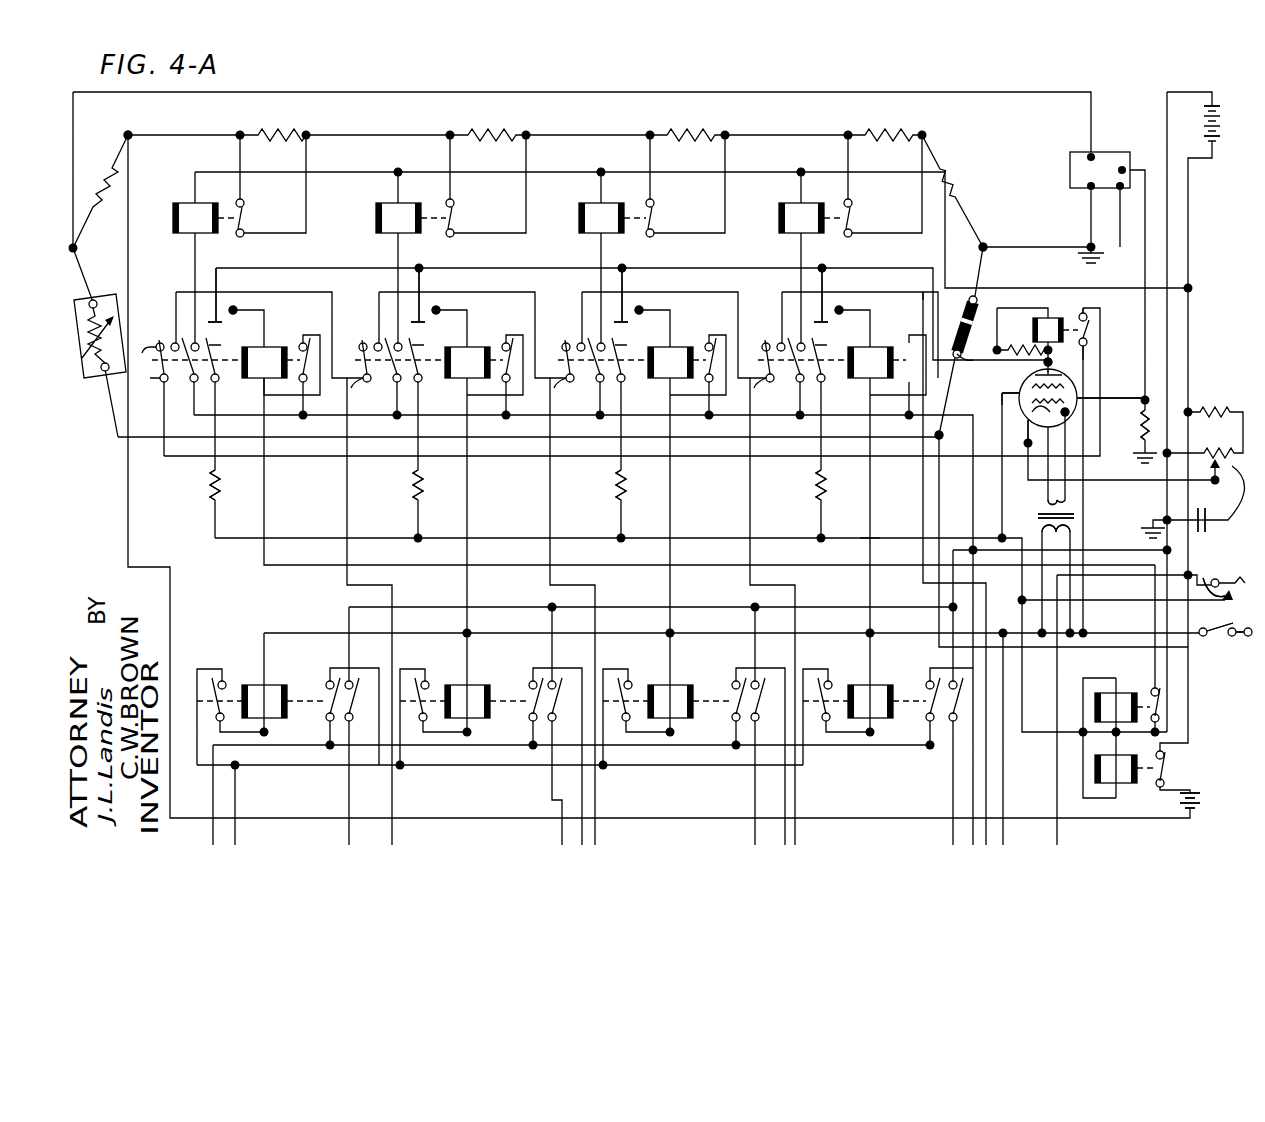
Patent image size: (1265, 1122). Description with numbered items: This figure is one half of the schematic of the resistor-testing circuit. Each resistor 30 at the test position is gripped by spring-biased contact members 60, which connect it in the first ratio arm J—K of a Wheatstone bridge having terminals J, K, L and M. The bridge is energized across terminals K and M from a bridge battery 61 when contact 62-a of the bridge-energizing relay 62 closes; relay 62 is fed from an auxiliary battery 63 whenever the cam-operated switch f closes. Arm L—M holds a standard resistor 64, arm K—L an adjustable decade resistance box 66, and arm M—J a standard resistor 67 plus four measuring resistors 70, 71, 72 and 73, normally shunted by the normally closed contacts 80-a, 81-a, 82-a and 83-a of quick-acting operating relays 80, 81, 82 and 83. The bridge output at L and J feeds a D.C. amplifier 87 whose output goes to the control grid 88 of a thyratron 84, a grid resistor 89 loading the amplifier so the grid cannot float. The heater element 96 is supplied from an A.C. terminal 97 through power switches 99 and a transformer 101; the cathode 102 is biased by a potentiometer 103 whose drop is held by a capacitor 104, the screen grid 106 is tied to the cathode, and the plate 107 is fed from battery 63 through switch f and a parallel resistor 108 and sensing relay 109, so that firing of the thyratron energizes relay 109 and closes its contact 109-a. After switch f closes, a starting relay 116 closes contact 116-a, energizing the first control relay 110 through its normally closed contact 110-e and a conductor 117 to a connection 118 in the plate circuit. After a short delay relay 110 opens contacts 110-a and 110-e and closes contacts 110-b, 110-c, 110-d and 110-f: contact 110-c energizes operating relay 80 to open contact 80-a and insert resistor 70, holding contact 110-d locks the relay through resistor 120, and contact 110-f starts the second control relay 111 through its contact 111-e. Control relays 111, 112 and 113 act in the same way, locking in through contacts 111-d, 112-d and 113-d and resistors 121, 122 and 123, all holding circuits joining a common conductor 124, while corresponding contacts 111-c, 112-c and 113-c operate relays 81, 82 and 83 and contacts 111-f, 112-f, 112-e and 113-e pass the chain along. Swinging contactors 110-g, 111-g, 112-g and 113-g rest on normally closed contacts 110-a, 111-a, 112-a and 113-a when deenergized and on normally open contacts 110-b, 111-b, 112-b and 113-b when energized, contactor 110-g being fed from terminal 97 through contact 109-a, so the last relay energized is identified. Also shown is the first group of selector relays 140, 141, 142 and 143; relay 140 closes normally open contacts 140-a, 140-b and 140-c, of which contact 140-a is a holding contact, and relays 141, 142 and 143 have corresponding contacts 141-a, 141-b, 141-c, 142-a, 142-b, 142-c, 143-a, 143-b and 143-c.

The bridge input terminal M is at (138, 129).
The bridge output terminal L is at (78, 248).
The bridge terminal J is at (988, 247).
The bridge input terminal K is at (939, 435).
The cam-operated switch f is at (1211, 582).
The resistor 30 is at (960, 308).
The contact members 60 is at (972, 368).
The bridge battery 61 is at (1174, 800).
The bridge-energizing relay 62 is at (1116, 769).
The contact 62-a is at (1166, 766).
The battery 63 is at (1200, 104).
The standard resistor 64 is at (102, 180).
The decade resistance box 66 is at (96, 294).
The standard resistor 67 is at (958, 181).
The measuring resistor 70 is at (288, 122).
The measuring resistor 71 is at (498, 122).
The measuring resistor 72 is at (706, 122).
The measuring resistor 73 is at (896, 122).
The operating relay 80 is at (204, 218).
The normally closed contact 80-a is at (286, 198).
The operating relay 81 is at (411, 218).
The normally closed contact 81-a is at (496, 198).
The operating relay 82 is at (612, 218).
The normally closed contact 82-a is at (696, 198).
The operating relay 83 is at (811, 218).
The normally closed contact 83-a is at (896, 198).
The thyratron 84 is at (1080, 396).
The D.C. amplifier 87 is at (1116, 152).
The control grid 88 is at (1070, 412).
The grid resistor 89 is at (1152, 420).
The heater element 96 is at (1066, 424).
The A.C. terminal 97 is at (1230, 632).
The power switches 99 is at (1218, 638).
The transformer 101 is at (1058, 510).
The cathode 102 is at (1002, 393).
The potentiometer 103 is at (1212, 524).
The capacitor 104 is at (1202, 543).
The screen grid 106 is at (1061, 388).
The plate 107 is at (1060, 374).
The resistor 108 is at (1020, 346).
The sensing relay 109 is at (1048, 330).
The contact 109-a is at (1076, 306).
The control relay 110 is at (264, 362).
The normally closed contact 110-a is at (166, 334).
The normally open contact 110-b is at (174, 342).
The normally open contact 110-c is at (216, 324).
The holding contact 110-d is at (222, 310).
The normally closed contact 110-e is at (224, 296).
The normally open contact 110-f is at (304, 340).
The swinging contactor 110-g is at (150, 378).
The control relay 111 is at (467, 362).
The normally closed contact 111-a is at (374, 334).
The normally open contact 111-b is at (382, 342).
The relay contact 111-c is at (424, 324).
The holding contact 111-d is at (430, 310).
The normally closed contact 111-e is at (428, 314).
The relay contact 111-f is at (506, 340).
The swinging contactor 111-g is at (374, 384).
The control relay 112 is at (670, 362).
The normally closed contact 112-a is at (576, 334).
The normally open contact 112-b is at (584, 342).
The relay contact 112-c is at (626, 324).
The holding contact 112-d is at (632, 310).
The relay contact 112-e is at (632, 314).
The relay contact 112-f is at (708, 340).
The swinging contactor 112-g is at (578, 384).
The control relay 113 is at (870, 362).
The normally closed contact 113-a is at (776, 334).
The normally open contact 113-b is at (784, 342).
The relay contact 113-c is at (826, 324).
The holding contact 113-d is at (832, 310).
The relay contact 113-e is at (836, 314).
The swinging contactor 113-g is at (778, 384).
The starting relay 116 is at (1116, 707).
The contact 116-a is at (1146, 692).
The conductor 117 is at (917, 274).
The connection 118 is at (1056, 359).
The resistor 120 is at (212, 486).
The resistor 121 is at (418, 486).
The resistor 122 is at (625, 486).
The resistor 123 is at (828, 486).
The common conductor 124 is at (864, 530).
The selector relay 140 is at (264, 701).
The holding contact 140-a is at (230, 672).
The normally open contact 140-b is at (328, 680).
The normally open contact 140-c is at (352, 674).
The selector relay 141 is at (467, 701).
The relay contact 141-a is at (433, 672).
The relay contact 141-b is at (530, 680).
The relay contact 141-c is at (554, 674).
The selector relay 142 is at (670, 701).
The relay contact 142-a is at (648, 672).
The relay contact 142-b is at (732, 680).
The relay contact 142-c is at (754, 674).
The selector relay 143 is at (870, 701).
The relay contact 143-a is at (846, 672).
The relay contact 143-b is at (918, 680).
The relay contact 143-c is at (932, 670).